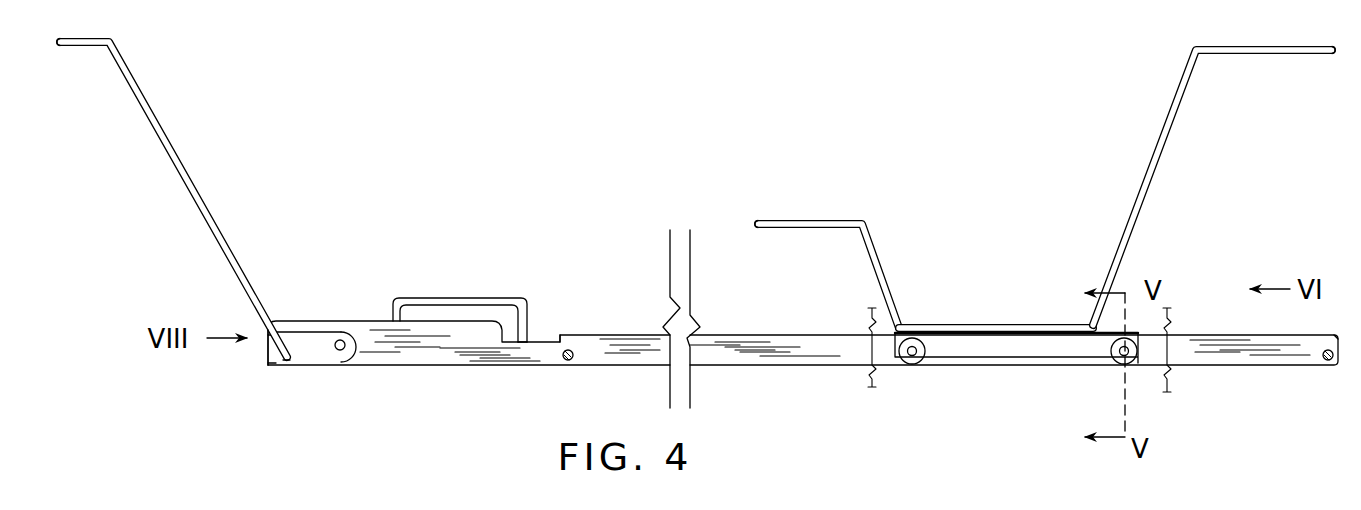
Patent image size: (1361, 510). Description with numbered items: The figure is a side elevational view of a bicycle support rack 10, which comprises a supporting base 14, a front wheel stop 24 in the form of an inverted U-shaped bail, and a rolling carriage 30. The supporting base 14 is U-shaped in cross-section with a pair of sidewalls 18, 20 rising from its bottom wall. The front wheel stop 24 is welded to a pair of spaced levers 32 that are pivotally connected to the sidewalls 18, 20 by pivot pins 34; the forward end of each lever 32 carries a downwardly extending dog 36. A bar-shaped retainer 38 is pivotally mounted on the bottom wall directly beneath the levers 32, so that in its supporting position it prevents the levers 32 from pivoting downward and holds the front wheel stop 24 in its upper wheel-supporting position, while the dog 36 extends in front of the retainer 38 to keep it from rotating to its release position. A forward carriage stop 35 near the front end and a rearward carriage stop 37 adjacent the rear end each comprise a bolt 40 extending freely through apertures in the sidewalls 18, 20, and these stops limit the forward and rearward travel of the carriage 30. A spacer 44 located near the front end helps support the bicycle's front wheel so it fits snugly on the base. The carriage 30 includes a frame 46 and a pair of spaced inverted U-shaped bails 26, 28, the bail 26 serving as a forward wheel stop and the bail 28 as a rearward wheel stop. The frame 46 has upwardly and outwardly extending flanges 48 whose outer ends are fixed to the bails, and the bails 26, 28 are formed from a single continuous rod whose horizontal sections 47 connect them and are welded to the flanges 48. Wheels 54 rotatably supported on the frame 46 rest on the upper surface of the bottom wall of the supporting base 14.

The bicycle support rack 10 is at (363, 160).
The supporting base 14 is at (477, 372).
The sidewall 18 is at (885, 348).
The sidewall 20 is at (395, 352).
The front wheel stop 24 is at (152, 117).
The bail 26 is at (802, 217).
The bail 28 is at (1192, 63).
The carriage 30 is at (1011, 318).
The lever 32 is at (300, 338).
The pivot pin 34 is at (342, 342).
The forward carriage stop 35 is at (568, 327).
The dog 36 is at (270, 368).
The rearward carriage stop 37 is at (1308, 368).
The retainer 38 is at (278, 367).
The bolt 40 is at (563, 363).
The spacer 44 is at (426, 278).
The frame 46 is at (1042, 338).
The horizontal section 47 is at (1007, 325).
The flange 48 is at (439, 298).
The wheel 54 is at (913, 364).